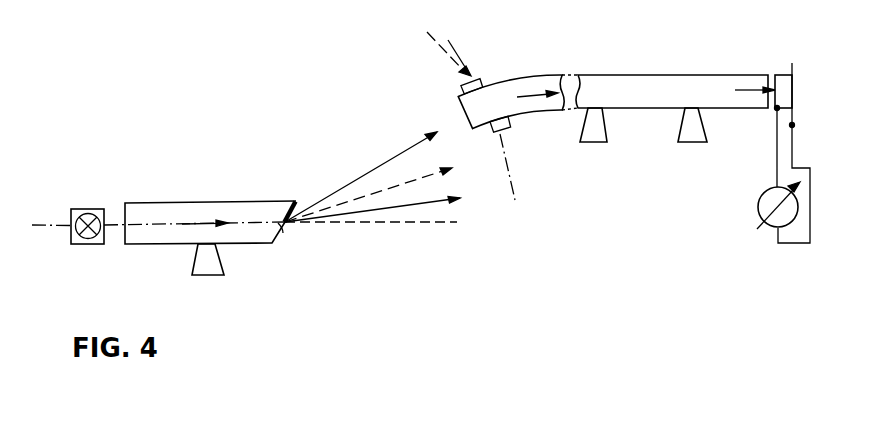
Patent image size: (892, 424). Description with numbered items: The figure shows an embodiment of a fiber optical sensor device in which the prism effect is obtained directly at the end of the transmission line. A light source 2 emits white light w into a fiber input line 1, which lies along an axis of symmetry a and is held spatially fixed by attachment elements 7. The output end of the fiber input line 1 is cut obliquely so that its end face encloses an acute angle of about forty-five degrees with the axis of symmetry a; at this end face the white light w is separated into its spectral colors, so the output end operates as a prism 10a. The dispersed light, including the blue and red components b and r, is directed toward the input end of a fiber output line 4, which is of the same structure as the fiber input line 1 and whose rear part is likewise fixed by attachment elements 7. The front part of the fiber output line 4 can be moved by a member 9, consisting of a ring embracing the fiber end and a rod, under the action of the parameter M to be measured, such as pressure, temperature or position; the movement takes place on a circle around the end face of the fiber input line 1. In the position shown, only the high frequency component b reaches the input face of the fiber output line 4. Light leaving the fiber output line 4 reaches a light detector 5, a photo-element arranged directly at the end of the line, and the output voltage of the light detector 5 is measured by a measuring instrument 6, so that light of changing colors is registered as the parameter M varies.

The axis of symmetry a is at (48, 222).
The light source 2 is at (90, 209).
The fiber input line 1 is at (173, 212).
The white light w is at (199, 226).
The prism 10a is at (283, 222).
The blue component b is at (365, 178).
The red component r is at (443, 199).
The member 9 is at (477, 78).
The parameter M is at (457, 53).
The fiber output line 4 is at (642, 83).
The light detector 5 is at (782, 73).
The measuring instrument 6 is at (768, 193).
The attachment elements 7 is at (213, 265).